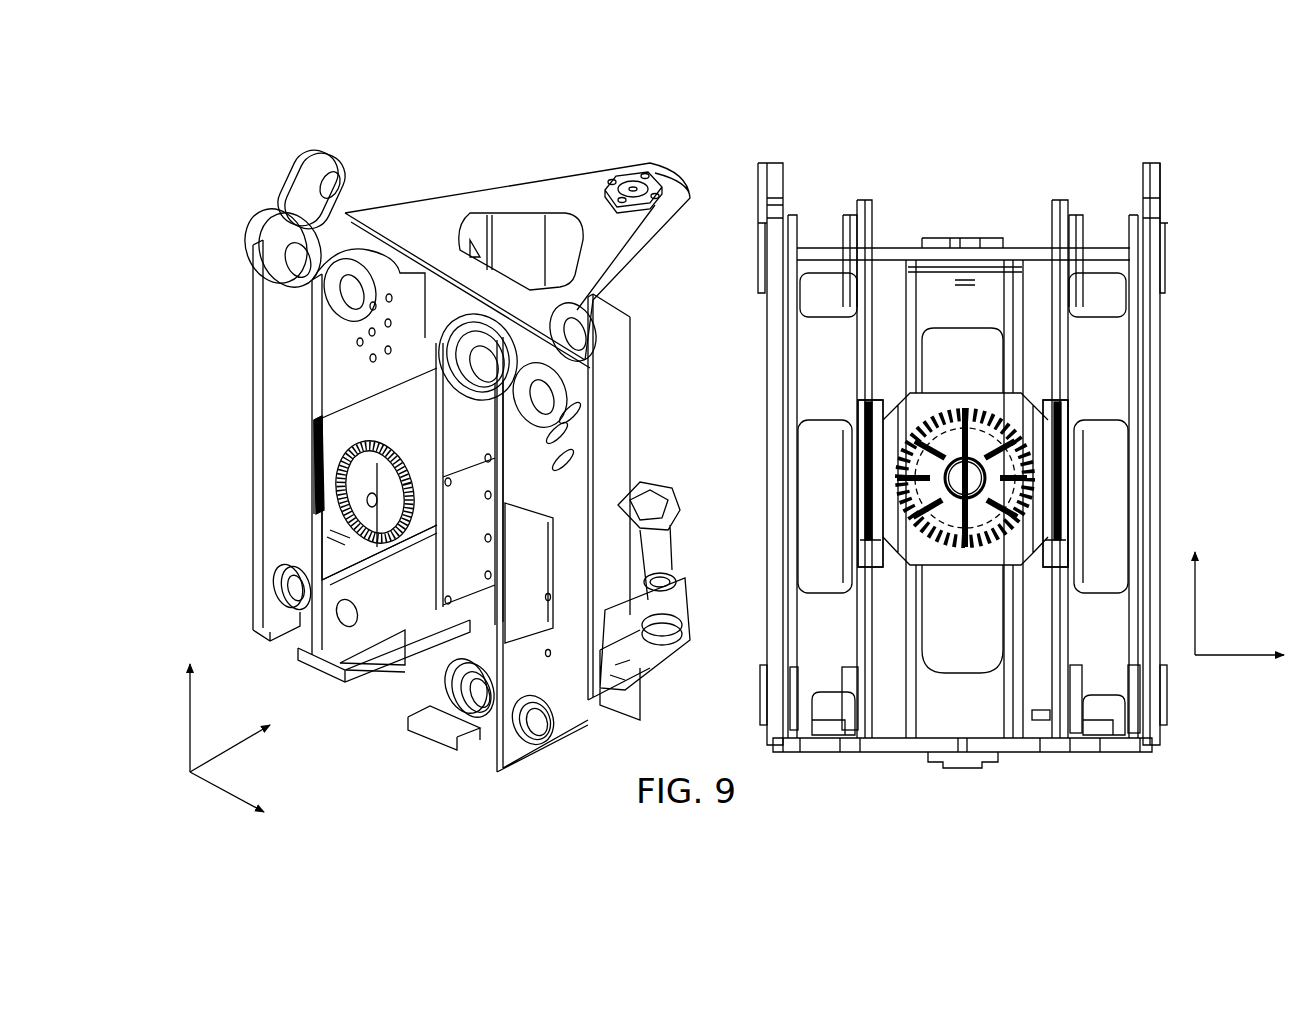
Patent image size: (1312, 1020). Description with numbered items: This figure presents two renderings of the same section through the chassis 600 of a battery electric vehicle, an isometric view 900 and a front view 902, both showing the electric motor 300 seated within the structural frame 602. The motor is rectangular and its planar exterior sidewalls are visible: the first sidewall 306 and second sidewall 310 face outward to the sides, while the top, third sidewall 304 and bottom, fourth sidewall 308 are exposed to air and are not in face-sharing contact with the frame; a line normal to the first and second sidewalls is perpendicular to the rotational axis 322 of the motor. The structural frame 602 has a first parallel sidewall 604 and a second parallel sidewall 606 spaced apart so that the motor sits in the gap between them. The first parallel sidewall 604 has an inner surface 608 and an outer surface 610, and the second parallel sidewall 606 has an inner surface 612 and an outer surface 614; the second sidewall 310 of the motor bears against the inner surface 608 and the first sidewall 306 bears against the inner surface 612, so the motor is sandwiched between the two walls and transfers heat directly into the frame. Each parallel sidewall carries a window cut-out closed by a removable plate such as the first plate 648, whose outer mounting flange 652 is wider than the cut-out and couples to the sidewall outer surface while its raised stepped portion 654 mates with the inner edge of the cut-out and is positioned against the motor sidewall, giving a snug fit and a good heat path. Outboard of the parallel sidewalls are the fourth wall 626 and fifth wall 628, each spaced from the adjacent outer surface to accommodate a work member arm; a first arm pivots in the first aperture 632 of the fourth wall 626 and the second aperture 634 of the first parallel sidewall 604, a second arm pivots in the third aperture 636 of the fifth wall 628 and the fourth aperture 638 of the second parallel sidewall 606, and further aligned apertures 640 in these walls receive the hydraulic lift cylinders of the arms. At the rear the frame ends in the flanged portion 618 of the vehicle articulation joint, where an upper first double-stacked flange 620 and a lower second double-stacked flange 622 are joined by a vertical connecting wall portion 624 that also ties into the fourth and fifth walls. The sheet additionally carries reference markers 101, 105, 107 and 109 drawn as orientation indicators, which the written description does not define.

The chassis 600 is at (455, 128).
The isometric view 900 is at (567, 110).
The front view 902 is at (1152, 110).
The first double-stacked flange 620 is at (580, 182).
The first aperture 632 is at (303, 252).
The second aperture 634 is at (353, 288).
The fourth wall 626 is at (260, 277).
The first parallel sidewall 604 is at (315, 388).
The fourth aperture 638 is at (485, 352).
The third aperture 636 is at (615, 333).
The vertical connecting wall portion 624 is at (565, 387).
The fifth wall 628 is at (563, 502).
The flanged portion 618 is at (688, 405).
The structural frame 602 is at (195, 428).
The third sidewall 304 is at (388, 432).
The electric motor 300 is at (332, 508).
The rotational axis 322 is at (327, 537).
The outer mounting flange 652 is at (445, 478).
The first plate 648 is at (451, 540).
The stepped portion 654 is at (433, 558).
The aligned apertures 640 is at (302, 588).
The second double-stacked flange 622 is at (668, 507).
The second parallel sidewall 606 is at (437, 665).
The first axis 101 is at (297, 765).
The vertical axis 105 is at (188, 730).
The depth axis 109 is at (232, 745).
The lateral axis 107 is at (200, 783).
The second sidewall 310 is at (884, 440).
The first sidewall 306 is at (1048, 497).
The fourth sidewall 308 is at (938, 567).
The outer surface 610 is at (857, 692).
The inner surface 608 is at (872, 692).
The inner surface 612 is at (1052, 678).
The outer surface 614 is at (1067, 678).